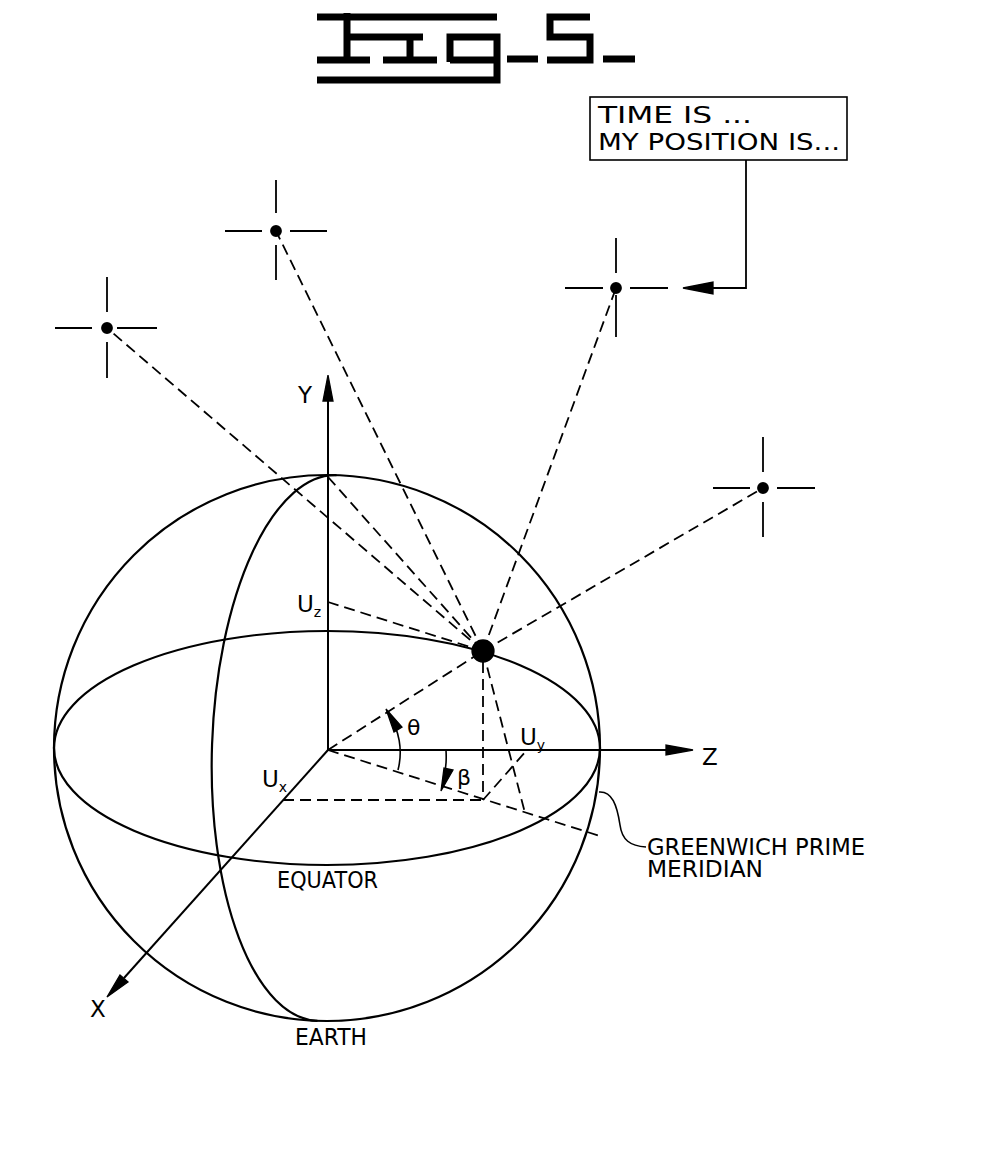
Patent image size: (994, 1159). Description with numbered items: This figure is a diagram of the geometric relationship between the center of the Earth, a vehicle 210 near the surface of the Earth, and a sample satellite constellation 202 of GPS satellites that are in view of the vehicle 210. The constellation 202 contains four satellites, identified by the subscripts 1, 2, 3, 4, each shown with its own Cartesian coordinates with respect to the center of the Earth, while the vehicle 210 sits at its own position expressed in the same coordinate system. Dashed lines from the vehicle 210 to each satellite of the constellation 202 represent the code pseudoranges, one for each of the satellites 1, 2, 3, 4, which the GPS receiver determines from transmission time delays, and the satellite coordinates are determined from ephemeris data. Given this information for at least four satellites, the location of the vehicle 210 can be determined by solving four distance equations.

The satellite constellation 202 is at (435, 391).
The vehicle 210 is at (483, 650).
The space vehicle SV1 1 is at (109, 324).
The space vehicle SV2 2 is at (278, 227).
The space vehicle SV3 3 is at (618, 284).
The space vehicle SV4 4 is at (765, 484).